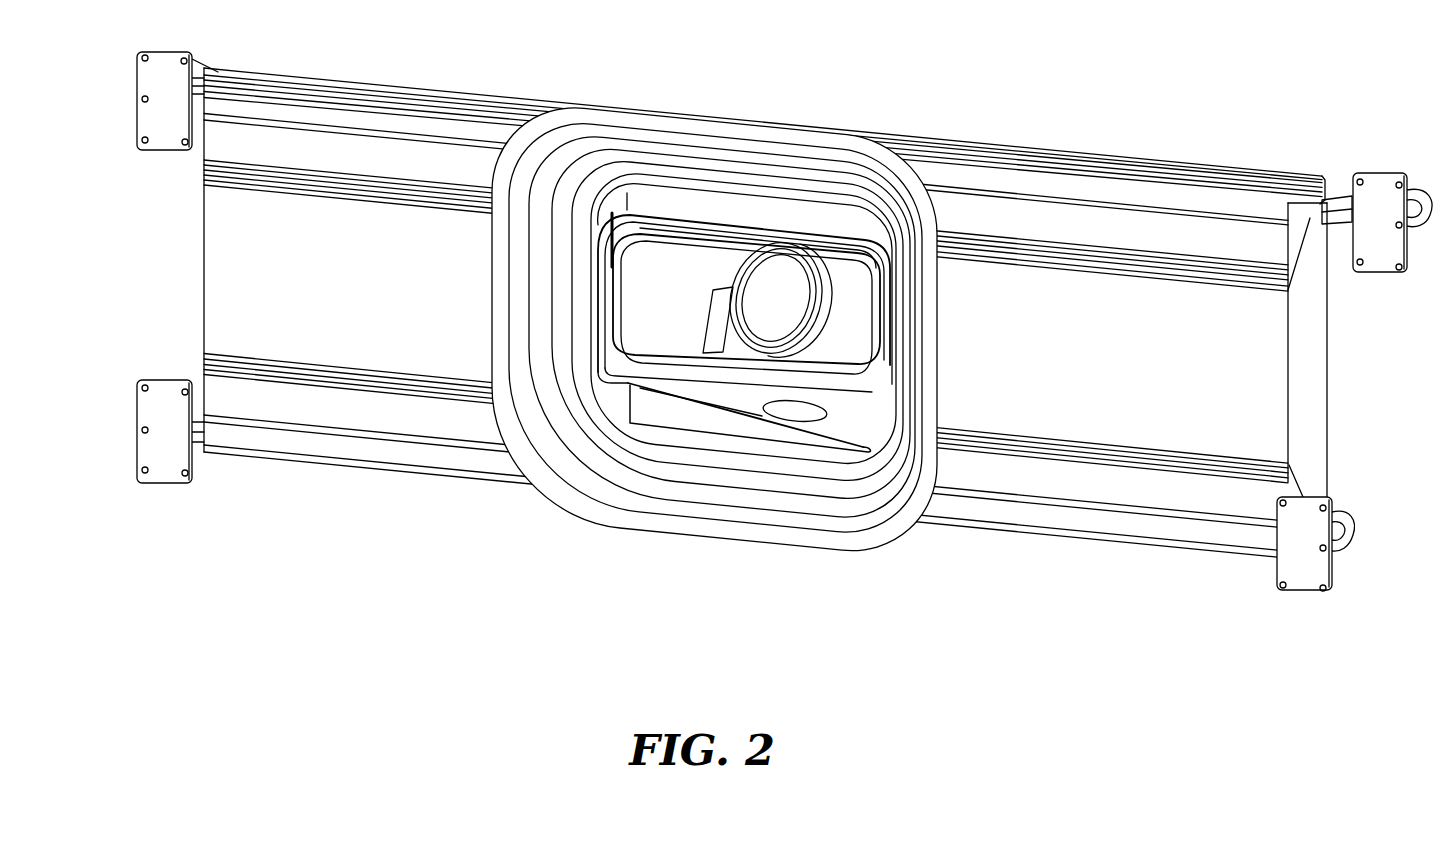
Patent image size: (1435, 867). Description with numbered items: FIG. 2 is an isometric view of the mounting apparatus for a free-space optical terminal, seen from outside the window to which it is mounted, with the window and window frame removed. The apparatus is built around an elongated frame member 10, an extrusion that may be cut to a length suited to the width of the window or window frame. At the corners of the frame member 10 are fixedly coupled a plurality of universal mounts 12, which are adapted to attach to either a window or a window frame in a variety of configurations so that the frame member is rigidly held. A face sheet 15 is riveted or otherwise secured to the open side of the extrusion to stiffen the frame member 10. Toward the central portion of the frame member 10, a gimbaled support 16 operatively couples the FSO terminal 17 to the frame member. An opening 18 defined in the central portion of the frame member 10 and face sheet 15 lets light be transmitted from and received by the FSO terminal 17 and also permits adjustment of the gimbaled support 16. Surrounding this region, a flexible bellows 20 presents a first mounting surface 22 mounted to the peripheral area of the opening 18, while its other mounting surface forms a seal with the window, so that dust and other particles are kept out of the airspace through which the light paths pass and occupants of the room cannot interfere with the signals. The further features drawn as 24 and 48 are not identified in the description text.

The frame member 10 is at (1287, 372).
The universal mounts 12 is at (168, 160).
The face sheet 15 is at (1323, 412).
The gimbaled support 16 is at (620, 406).
The FSO terminal 17 is at (792, 262).
The opening 18 is at (678, 200).
The flexible bellows 20 is at (680, 492).
The first mounting surface 22 is at (733, 213).
The outer seal ring 24 is at (790, 538).
The drain opening 48 is at (847, 412).